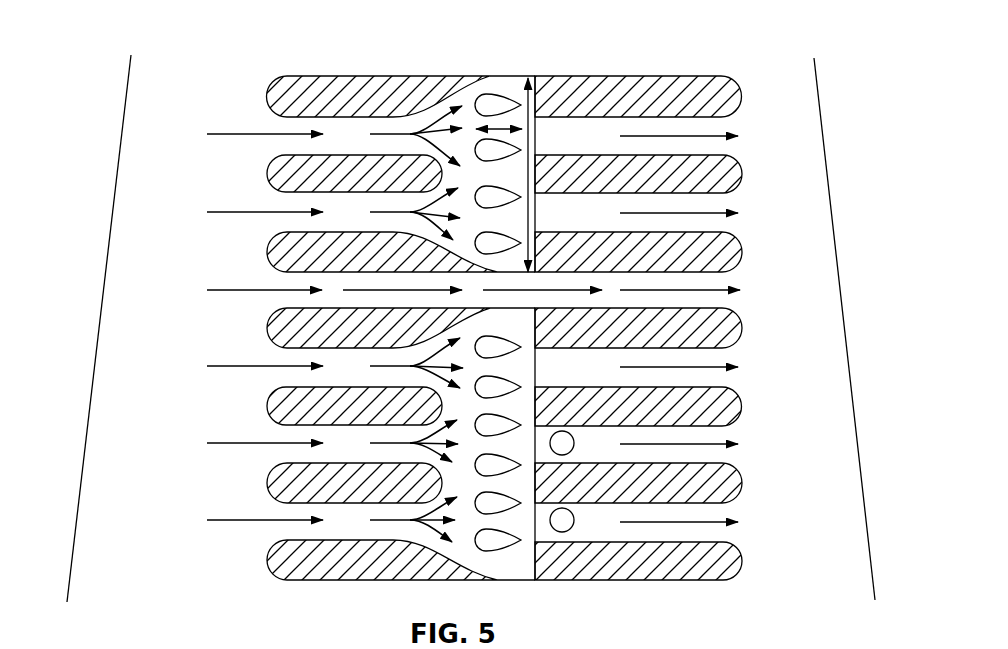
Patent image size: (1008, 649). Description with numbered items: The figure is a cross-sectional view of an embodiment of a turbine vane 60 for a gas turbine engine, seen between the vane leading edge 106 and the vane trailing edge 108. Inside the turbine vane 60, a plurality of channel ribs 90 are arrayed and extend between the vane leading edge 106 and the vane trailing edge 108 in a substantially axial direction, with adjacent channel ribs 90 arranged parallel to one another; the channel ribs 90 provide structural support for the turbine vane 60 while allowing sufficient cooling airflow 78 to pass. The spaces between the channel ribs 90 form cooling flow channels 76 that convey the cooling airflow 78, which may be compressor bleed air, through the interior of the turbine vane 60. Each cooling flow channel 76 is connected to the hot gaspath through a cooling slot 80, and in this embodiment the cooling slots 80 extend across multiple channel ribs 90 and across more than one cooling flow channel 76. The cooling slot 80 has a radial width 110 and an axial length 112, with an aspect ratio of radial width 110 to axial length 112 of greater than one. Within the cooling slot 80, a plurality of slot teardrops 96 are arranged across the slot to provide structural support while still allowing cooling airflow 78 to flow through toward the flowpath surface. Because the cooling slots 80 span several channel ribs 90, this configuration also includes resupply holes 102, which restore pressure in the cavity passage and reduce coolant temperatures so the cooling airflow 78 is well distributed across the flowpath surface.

The turbine vane 60 is at (168, 22).
The cooling flow channel 76 is at (360, 132).
The cooling airflow 78 is at (238, 133).
The cooling slot 80 is at (493, 122).
The channel rib 90 is at (600, 92).
The slot teardrop 96 is at (502, 103).
The resupply hole 102 is at (562, 431).
The vane leading edge 106 is at (122, 114).
The vane trailing edge 108 is at (818, 92).
The radial width 110 is at (533, 198).
The axial length 112 is at (486, 83).